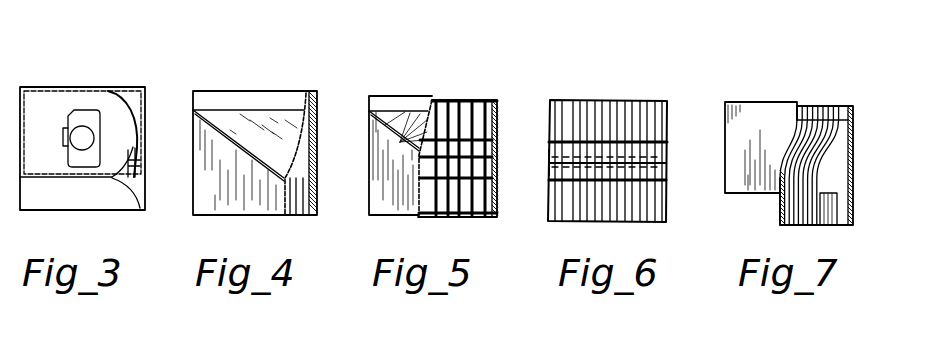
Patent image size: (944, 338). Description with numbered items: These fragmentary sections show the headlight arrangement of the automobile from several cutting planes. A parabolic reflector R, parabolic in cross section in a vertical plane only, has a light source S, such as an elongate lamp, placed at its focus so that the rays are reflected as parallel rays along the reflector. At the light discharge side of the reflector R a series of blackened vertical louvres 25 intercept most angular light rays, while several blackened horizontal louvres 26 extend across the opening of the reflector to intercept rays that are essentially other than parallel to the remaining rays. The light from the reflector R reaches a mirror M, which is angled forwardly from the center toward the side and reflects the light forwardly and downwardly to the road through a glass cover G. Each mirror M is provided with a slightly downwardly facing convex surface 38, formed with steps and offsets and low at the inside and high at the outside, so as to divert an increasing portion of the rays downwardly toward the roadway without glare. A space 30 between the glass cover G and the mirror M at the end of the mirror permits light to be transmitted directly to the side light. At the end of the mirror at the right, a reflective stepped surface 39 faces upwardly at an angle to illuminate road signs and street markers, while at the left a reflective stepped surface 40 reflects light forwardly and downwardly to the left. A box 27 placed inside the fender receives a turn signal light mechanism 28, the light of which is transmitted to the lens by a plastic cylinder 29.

In FIG. 3, the box 27 is at (78, 88).
In FIG. 3, the turn signal light mechanism 28 is at (94, 113).
In FIG. 3, the plastic cylinder 29 is at (78, 150).
In FIG. 3, the mirror M is at (141, 127).
In FIG. 4, the mirror M is at (299, 108).
In FIG. 5, the mirror M is at (425, 119).
In FIG. 7, the mirror M is at (824, 120).
In FIG. 3, the convex surface 38 is at (138, 146).
In FIG. 4, the convex surface 38 is at (322, 157).
In FIG. 5, the convex surface 38 is at (418, 149).
In FIG. 7, the convex surface 38 is at (838, 160).
In FIG. 3, the space 30 is at (128, 170).
In FIG. 7, the space 30 is at (843, 203).
In FIG. 3, the glass cover G is at (150, 163).
In FIG. 4, the glass cover G is at (316, 113).
In FIG. 5, the glass cover G is at (498, 134).
In FIG. 7, the glass cover G is at (854, 129).
In FIG. 3, the reflective stepped surface 39 is at (140, 208).
In FIG. 4, the parabolic reflector R is at (301, 199).
In FIG. 5, the parabolic reflector R is at (487, 100).
In FIG. 6, the parabolic reflector R is at (624, 100).
In FIG. 6, the vertical louvres 25 is at (641, 106).
In FIG. 6, the horizontal louvres 26 is at (668, 181).
In FIG. 6, the light source S is at (549, 163).
In FIG. 7, the reflective stepped surface 40 is at (830, 214).